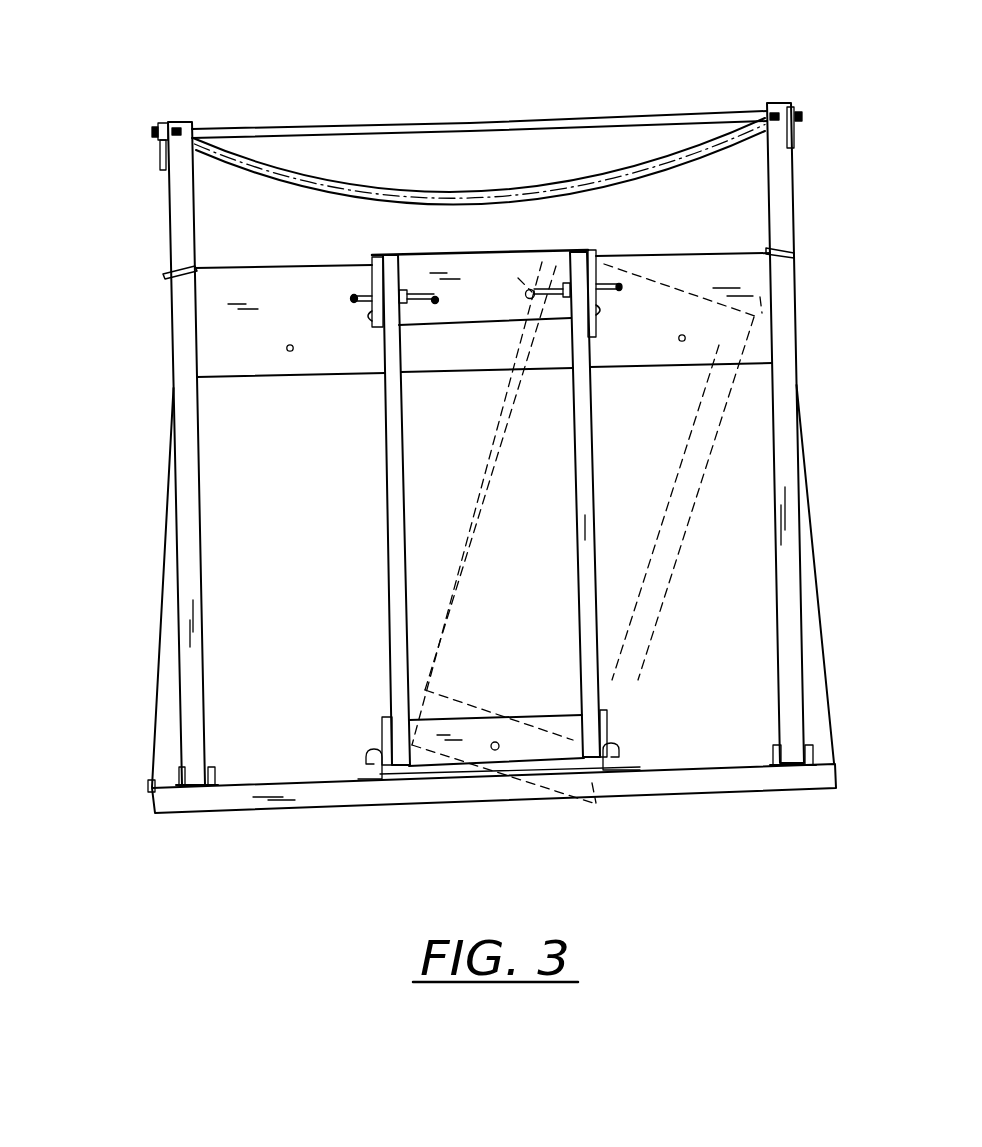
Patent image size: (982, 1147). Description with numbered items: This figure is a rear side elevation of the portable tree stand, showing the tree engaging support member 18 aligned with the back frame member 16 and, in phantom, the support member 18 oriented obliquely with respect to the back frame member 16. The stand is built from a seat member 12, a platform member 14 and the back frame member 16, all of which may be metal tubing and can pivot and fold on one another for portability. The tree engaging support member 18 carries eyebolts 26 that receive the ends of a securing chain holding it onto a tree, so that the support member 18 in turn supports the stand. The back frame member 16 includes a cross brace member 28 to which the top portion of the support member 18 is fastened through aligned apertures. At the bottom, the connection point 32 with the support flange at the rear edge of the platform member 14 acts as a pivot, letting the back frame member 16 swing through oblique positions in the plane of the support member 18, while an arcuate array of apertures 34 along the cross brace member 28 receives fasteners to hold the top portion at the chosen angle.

The seat member 12 is at (612, 113).
The platform member 14 is at (680, 785).
The back frame member 16 is at (187, 405).
The tree engaging support member 18 is at (397, 520).
The eyebolts 26 is at (353, 297).
The cross brace member 28 is at (218, 345).
The connection point 32 is at (493, 750).
The apertures 34 is at (293, 351).